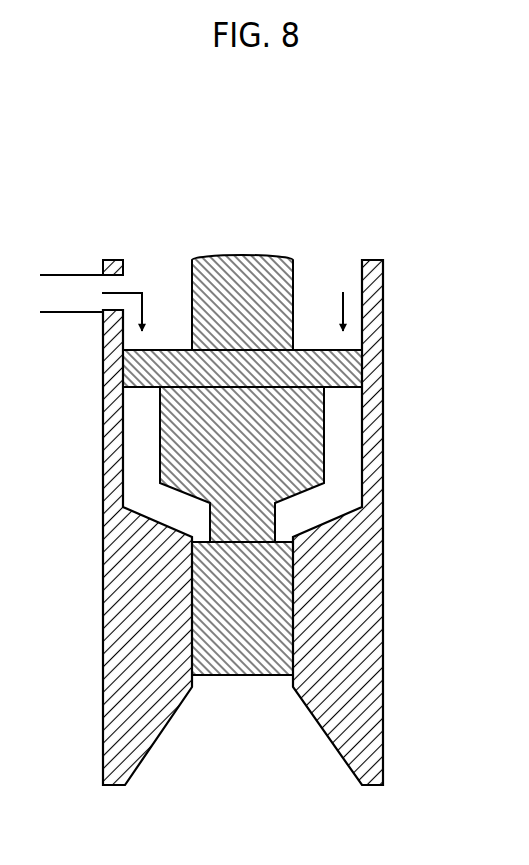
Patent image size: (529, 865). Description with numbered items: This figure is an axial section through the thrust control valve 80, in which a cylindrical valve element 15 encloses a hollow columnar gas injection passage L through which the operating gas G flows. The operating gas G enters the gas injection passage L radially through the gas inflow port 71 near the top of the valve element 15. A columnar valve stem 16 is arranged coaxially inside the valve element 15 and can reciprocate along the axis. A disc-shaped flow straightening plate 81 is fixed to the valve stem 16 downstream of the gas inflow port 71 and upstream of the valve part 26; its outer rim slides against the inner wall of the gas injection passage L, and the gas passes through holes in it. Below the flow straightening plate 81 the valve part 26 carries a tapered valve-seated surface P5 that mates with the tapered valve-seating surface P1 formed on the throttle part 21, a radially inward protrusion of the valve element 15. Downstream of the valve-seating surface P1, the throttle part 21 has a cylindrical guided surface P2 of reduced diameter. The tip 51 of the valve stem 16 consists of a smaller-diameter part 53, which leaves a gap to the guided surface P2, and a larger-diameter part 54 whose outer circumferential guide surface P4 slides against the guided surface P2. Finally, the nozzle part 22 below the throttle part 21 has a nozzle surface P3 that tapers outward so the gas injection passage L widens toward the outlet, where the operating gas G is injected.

The valve element 15 is at (393, 311).
The valve stem 16 is at (188, 282).
The throttle part 21 is at (204, 686).
The nozzle part 22 is at (176, 733).
The valve part 26 is at (324, 420).
The tip 51 is at (181, 636).
The smaller-diameter part 53 is at (185, 508).
The larger-diameter part 54 is at (190, 665).
The gas inflow port 71 is at (64, 313).
The thrust control valve 80 is at (251, 200).
The flow straightening plate 81 is at (345, 370).
The operating gas G is at (331, 292).
The gas injection passage L is at (138, 455).
The valve-seating surface P1 is at (192, 540).
The guided surface P2 is at (192, 604).
The nozzle surface P3 is at (147, 757).
The guide surface P4 is at (295, 625).
The valve-seated surface P5 is at (313, 497).